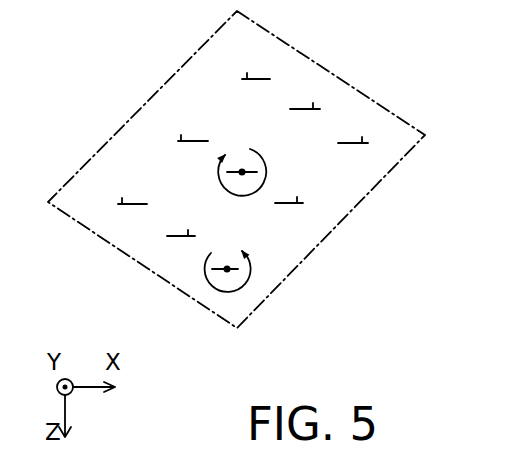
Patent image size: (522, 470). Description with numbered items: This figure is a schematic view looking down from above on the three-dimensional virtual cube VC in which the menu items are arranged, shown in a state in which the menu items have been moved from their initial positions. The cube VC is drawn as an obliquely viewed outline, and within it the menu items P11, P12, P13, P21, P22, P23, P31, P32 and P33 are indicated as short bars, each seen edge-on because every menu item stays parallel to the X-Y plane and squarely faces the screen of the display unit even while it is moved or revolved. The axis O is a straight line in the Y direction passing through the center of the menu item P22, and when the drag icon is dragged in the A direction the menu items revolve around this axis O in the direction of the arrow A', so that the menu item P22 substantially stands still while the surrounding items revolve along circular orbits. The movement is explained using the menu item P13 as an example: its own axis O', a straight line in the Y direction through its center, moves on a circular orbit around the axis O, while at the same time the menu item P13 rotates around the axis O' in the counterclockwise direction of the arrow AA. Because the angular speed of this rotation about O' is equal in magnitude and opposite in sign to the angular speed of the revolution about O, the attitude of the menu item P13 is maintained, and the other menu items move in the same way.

The three-dimensional virtual cube VC is at (376, 79).
The menu item P11 is at (128, 173).
The menu item P12 is at (196, 206).
The menu item P13 is at (224, 268).
The menu item P21 is at (188, 113).
The menu item P22 is at (237, 171).
The menu item P23 is at (315, 181).
The menu item P31 is at (251, 51).
The menu item P32 is at (317, 81).
The menu item P33 is at (366, 115).
The axis O is at (262, 143).
The axis O' is at (250, 240).
The arrow A' is at (221, 172).
The arrow AA is at (204, 266).